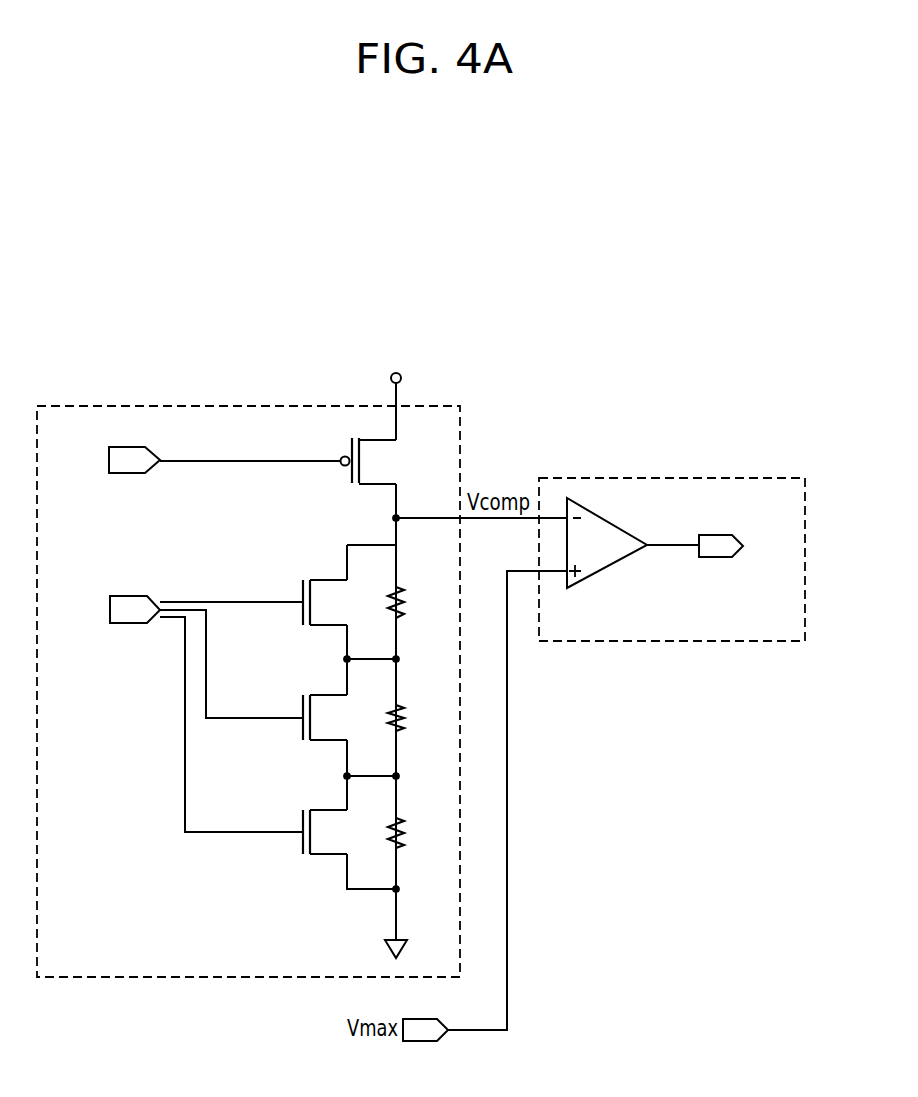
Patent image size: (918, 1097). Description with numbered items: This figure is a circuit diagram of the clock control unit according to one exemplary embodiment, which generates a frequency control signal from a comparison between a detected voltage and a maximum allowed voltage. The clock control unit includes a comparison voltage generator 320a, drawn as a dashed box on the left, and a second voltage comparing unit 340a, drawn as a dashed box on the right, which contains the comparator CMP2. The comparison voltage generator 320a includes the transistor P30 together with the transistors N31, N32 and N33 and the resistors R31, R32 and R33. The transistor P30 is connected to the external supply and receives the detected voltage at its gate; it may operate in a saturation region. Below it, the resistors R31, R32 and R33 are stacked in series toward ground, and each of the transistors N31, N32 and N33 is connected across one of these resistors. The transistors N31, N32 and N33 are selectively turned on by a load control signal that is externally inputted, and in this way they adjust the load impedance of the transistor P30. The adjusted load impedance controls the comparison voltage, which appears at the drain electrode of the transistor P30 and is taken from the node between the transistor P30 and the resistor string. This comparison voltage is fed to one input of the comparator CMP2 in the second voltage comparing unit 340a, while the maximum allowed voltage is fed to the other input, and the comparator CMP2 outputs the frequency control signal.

The comparison voltage generator 320a is at (213, 406).
The second voltage comparing unit 340a is at (671, 478).
The transistor P30 is at (388, 461).
The transistor N31 is at (302, 598).
The transistor N32 is at (302, 712).
The transistor N33 is at (302, 826).
The resistor R31 is at (419, 602).
The resistor R32 is at (419, 718).
The resistor R33 is at (419, 833).
The comparator CMP2 is at (607, 557).